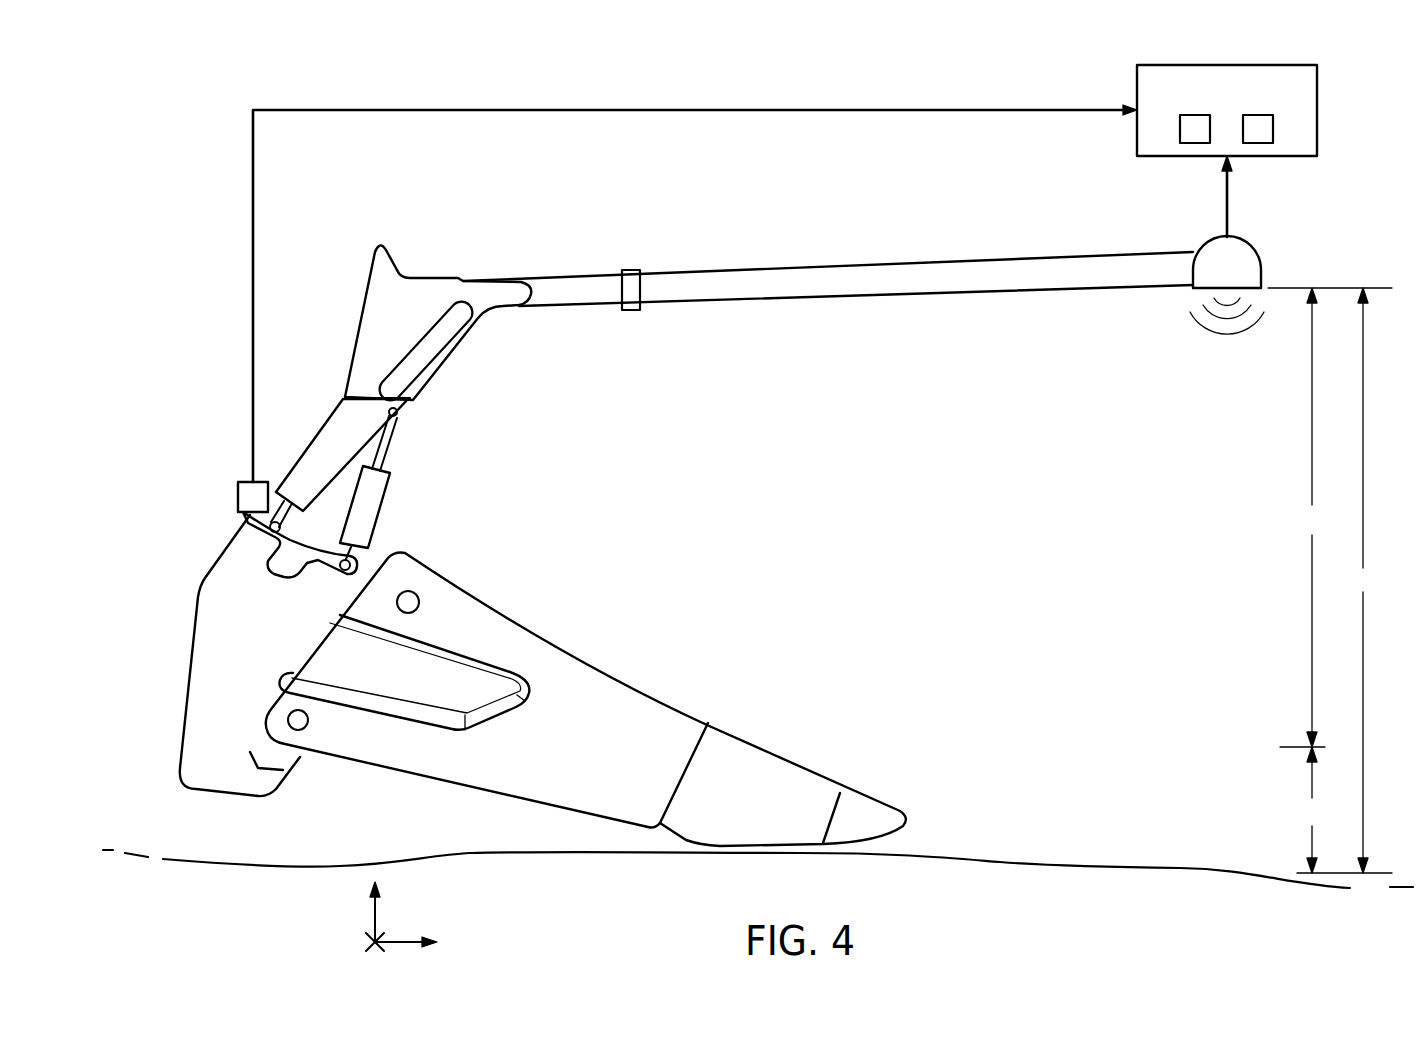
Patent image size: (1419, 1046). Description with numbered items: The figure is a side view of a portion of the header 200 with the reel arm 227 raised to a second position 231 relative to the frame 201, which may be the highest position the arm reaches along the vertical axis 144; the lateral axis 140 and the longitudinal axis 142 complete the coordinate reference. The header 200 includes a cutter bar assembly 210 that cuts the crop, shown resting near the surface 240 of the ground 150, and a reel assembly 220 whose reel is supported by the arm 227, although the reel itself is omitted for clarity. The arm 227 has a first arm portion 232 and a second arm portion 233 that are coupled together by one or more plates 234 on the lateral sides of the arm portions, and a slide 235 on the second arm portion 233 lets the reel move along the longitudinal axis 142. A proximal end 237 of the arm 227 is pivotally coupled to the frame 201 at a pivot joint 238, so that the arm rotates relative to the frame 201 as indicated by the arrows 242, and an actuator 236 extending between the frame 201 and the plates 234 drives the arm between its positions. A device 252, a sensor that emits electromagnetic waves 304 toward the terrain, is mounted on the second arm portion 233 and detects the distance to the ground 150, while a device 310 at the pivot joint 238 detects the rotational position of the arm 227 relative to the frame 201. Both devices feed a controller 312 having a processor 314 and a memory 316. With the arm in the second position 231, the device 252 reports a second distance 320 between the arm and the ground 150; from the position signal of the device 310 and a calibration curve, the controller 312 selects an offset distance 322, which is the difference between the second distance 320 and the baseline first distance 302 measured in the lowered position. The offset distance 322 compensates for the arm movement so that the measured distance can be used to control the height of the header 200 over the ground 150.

The header 200 is at (498, 68).
The controller 312 is at (1317, 108).
The processor 314 is at (1195, 143).
The memory 316 is at (1258, 143).
The reel assembly 220 is at (803, 182).
The arm 227 is at (968, 207).
The second arm portion 233 is at (920, 263).
The slide 235 is at (625, 268).
The plates 234 is at (390, 253).
The device 252 is at (1242, 257).
The electromagnetic waves 304 is at (1170, 335).
The pivot joint 238 is at (299, 424).
The first arm portion 232 is at (323, 418).
The arrows 242 is at (199, 506).
The device 310 is at (262, 482).
The end 237 is at (260, 525).
The actuator 236 is at (378, 502).
The second position 231 is at (857, 598).
The frame 201 is at (192, 668).
The cutter bar assembly 210 is at (903, 792).
The surface 240 is at (985, 862).
The ground 150 is at (945, 863).
The offset distance 322 is at (1306, 517).
The second distance 320 is at (1330, 580).
The first distance 302 is at (1312, 810).
The vertical axis 144 is at (375, 918).
The longitudinal axis 142 is at (400, 940).
The lateral axis 140 is at (365, 940).